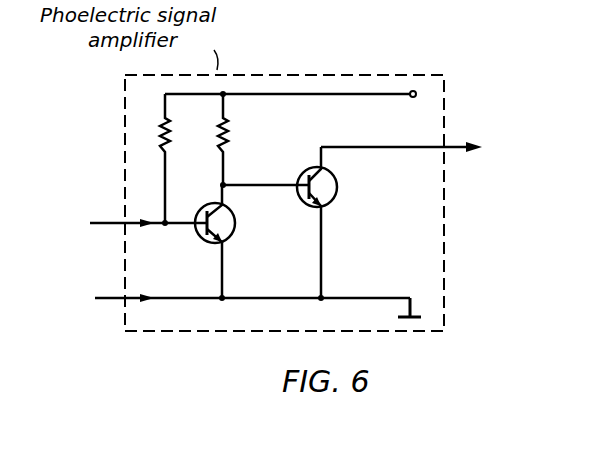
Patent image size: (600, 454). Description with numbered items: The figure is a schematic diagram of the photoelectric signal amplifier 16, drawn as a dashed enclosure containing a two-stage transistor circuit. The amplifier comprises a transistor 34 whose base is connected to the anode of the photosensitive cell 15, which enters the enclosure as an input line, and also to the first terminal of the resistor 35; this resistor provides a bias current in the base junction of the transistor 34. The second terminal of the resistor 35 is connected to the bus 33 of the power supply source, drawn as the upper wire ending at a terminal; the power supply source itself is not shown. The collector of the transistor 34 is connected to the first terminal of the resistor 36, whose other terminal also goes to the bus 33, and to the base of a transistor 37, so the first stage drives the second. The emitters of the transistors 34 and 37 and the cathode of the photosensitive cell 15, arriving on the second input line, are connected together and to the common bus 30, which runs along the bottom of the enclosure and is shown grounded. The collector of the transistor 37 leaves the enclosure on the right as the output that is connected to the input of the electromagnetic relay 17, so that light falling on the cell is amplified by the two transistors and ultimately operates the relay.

The photoelectric signal amplifier 16 is at (345, 68).
The bus of the power supply source 33 is at (415, 91).
The resistor 35 is at (172, 147).
The resistor 36 is at (231, 139).
The transistor 34 is at (234, 229).
The transistor 37 is at (338, 190).
The photosensitive cell 15 is at (246, 248).
The electromagnetic relay 17 is at (425, 151).
The common bus 30 is at (411, 298).